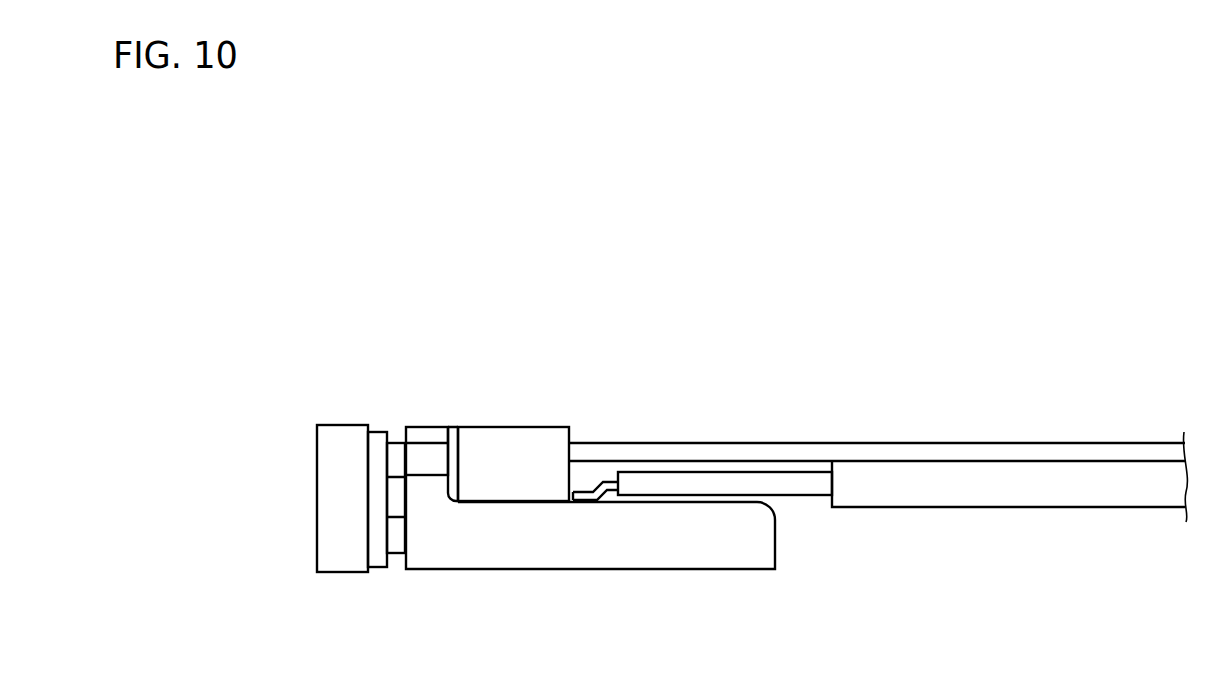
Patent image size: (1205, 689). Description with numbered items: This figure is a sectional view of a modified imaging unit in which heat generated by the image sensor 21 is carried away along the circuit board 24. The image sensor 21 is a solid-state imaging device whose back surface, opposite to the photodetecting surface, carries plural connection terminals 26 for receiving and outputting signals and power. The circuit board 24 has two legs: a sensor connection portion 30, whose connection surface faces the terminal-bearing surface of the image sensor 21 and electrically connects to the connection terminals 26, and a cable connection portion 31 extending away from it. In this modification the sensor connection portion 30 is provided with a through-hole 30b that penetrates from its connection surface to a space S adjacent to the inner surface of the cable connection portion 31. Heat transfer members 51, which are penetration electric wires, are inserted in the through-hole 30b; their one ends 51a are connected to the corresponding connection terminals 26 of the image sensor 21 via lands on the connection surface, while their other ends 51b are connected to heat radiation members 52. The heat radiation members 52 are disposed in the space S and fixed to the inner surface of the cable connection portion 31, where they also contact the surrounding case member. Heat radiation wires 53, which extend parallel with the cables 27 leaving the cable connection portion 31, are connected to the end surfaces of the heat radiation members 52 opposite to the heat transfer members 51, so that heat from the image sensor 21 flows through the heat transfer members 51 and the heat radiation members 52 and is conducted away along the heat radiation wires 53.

The image sensor 21 is at (317, 498).
The circuit board 24 is at (757, 572).
The connection terminals 26 is at (397, 443).
The cables 27 is at (972, 510).
The sensor connection portion 30 is at (433, 455).
The through-hole 30b is at (448, 443).
The cable connection portion 31 is at (775, 537).
The heat transfer members 51 is at (450, 427).
The one ends of heat transfer members 51a is at (403, 462).
The other ends of heat transfer members 51b is at (459, 463).
The heat radiation members 52 is at (515, 435).
The heat radiation wires 53 is at (825, 443).
The space S is at (597, 473).